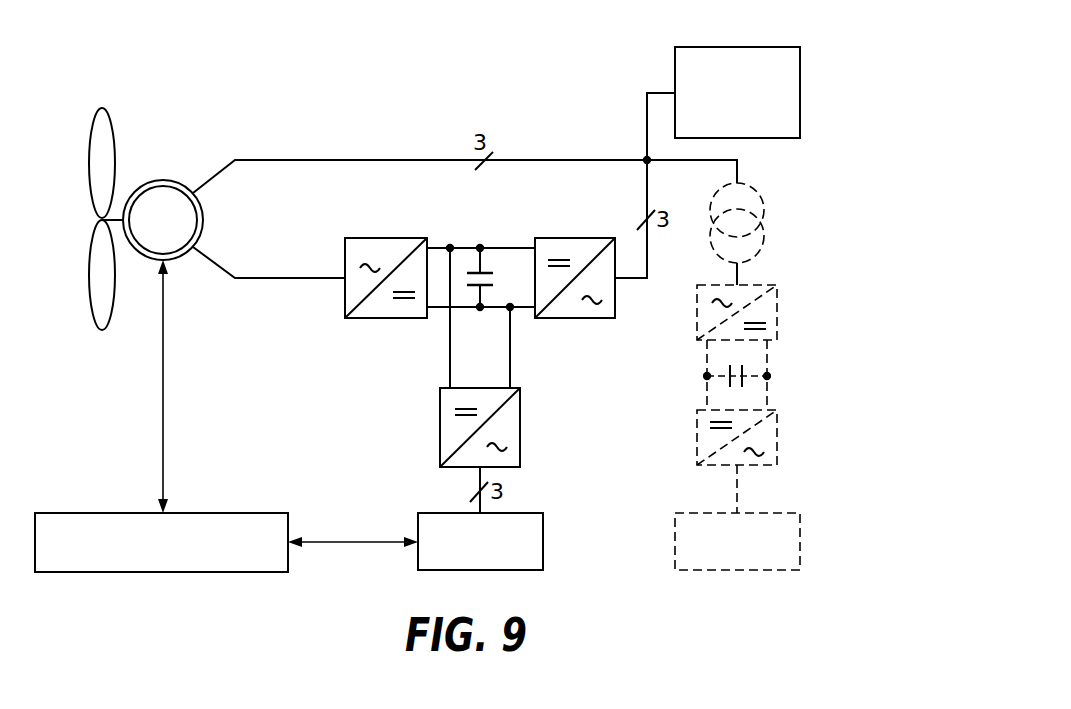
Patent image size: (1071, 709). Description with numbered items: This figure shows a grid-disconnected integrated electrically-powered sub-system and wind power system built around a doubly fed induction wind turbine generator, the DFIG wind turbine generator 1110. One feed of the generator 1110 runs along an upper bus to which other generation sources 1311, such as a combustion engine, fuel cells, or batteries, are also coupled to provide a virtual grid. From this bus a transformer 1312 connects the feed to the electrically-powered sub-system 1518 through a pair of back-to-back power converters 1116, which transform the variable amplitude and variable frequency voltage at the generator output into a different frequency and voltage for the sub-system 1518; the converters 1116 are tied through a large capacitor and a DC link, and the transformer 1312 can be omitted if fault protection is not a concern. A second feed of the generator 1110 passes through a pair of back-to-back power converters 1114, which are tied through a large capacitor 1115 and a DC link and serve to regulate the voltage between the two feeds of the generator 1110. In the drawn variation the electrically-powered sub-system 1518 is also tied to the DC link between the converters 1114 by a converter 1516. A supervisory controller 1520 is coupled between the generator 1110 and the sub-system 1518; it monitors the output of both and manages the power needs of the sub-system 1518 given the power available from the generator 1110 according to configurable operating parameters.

The DFIG wind turbine generator 1110 is at (165, 180).
The back-to-back power converters 1114 is at (388, 238).
The capacitor 1115 is at (485, 267).
The other generation sources 1311 is at (747, 47).
The transformer 1312 is at (765, 203).
The back-to-back power converters 1116 is at (780, 310).
The converter 1516 is at (523, 428).
The electrically-powered sub-system 1518 is at (546, 542).
The supervisory controller 1520 is at (216, 513).